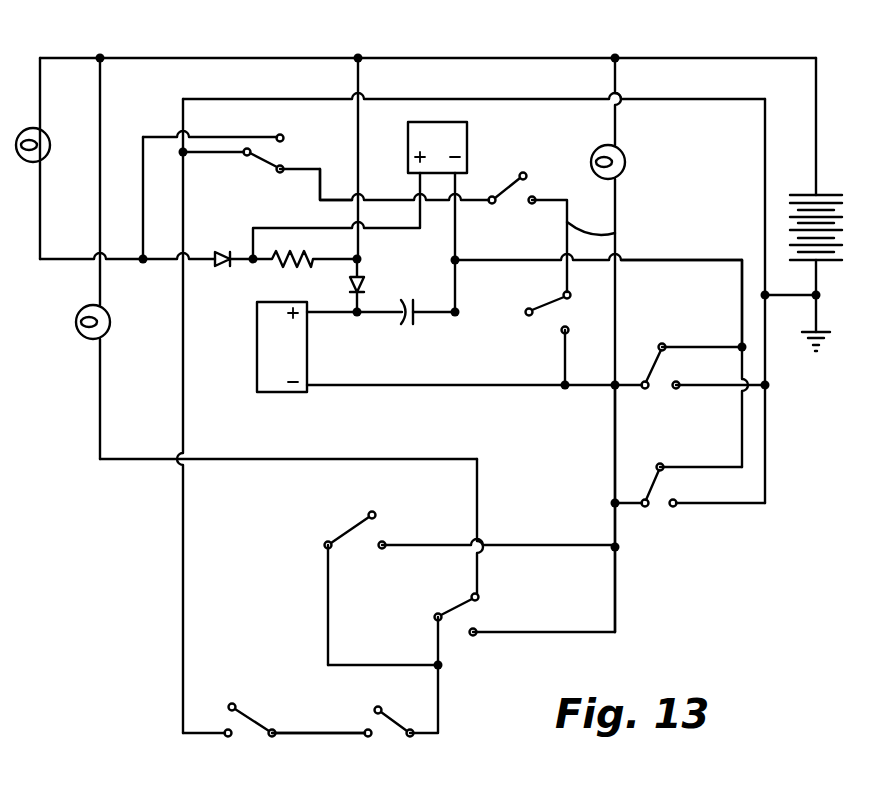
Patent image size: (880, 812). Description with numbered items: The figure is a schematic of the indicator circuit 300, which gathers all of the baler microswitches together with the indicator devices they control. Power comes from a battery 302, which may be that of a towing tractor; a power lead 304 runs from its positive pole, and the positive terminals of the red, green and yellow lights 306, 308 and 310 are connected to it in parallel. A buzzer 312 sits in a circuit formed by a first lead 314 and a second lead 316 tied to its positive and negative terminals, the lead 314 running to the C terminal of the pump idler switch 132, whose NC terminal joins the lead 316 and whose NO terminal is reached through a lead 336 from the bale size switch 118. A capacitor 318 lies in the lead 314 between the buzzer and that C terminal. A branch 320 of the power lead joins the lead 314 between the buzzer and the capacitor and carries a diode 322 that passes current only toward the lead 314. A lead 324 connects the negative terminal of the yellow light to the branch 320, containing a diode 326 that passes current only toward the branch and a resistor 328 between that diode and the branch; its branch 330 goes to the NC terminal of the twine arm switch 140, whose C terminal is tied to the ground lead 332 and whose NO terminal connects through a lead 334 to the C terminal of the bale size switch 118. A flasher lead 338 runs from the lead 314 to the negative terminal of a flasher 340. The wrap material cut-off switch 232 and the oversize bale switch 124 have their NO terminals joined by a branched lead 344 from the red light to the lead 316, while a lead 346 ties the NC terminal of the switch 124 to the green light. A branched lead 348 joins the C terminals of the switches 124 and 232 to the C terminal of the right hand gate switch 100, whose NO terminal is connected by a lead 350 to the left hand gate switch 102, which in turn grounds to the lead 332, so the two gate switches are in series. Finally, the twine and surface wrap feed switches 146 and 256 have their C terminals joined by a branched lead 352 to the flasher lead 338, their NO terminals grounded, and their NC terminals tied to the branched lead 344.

The right hand gate switch 100 is at (400, 712).
The left hand gate switch 102 is at (255, 700).
The bale size switch 118 is at (496, 185).
The oversize bale switch 124 is at (452, 600).
The pump idler switch 132 is at (548, 305).
The twine arm switch 140 is at (253, 172).
The twine feed switch 146 is at (690, 345).
The wrap material cut-off switch 232 is at (338, 531).
The surface wrap feed switch 256 is at (657, 543).
The indicator circuit 300 is at (132, 558).
The battery 302 is at (817, 195).
The power lead 304 is at (217, 57).
The red light 306 is at (626, 165).
The green light 308 is at (78, 318).
The yellow light 310 is at (50, 143).
The buzzer 312 is at (262, 392).
The first lead 314 is at (330, 313).
The second lead 316 is at (425, 387).
The capacitor 318 is at (412, 315).
The branch of the power lead 320 is at (358, 82).
The diode 322 is at (363, 285).
The lead 324 is at (119, 259).
The diode 326 is at (222, 268).
The resistor 328 is at (300, 265).
The branch 330 is at (228, 136).
The ground lead 332 is at (183, 387).
The lead 334 is at (320, 175).
The lead 336 is at (620, 228).
The flasher lead 338 is at (458, 259).
The flasher 340 is at (425, 122).
The branched lead 344 is at (613, 447).
The lead 346 is at (237, 460).
The branched lead 348 is at (398, 665).
The lead 350 is at (305, 735).
The branched lead 352 is at (667, 260).